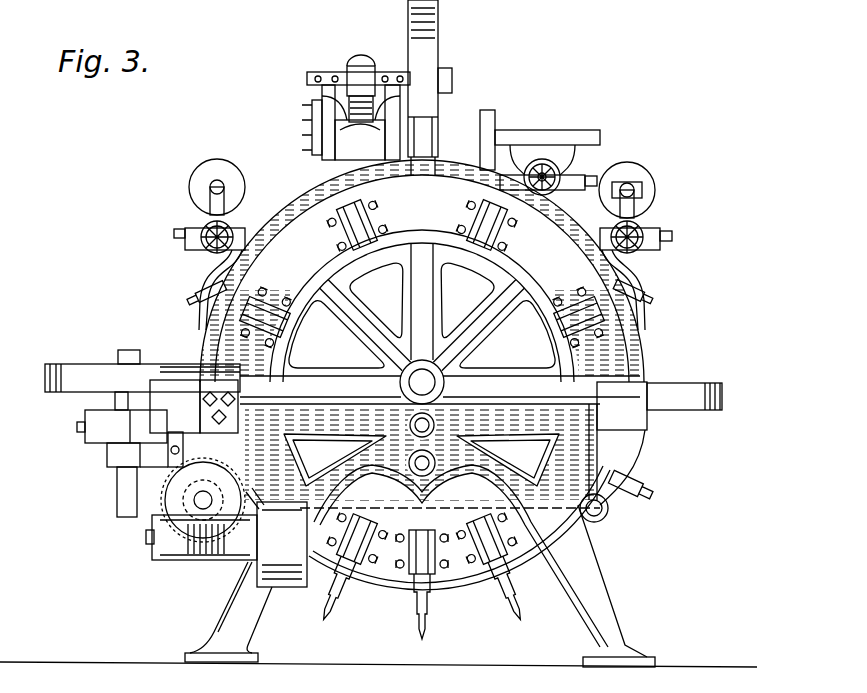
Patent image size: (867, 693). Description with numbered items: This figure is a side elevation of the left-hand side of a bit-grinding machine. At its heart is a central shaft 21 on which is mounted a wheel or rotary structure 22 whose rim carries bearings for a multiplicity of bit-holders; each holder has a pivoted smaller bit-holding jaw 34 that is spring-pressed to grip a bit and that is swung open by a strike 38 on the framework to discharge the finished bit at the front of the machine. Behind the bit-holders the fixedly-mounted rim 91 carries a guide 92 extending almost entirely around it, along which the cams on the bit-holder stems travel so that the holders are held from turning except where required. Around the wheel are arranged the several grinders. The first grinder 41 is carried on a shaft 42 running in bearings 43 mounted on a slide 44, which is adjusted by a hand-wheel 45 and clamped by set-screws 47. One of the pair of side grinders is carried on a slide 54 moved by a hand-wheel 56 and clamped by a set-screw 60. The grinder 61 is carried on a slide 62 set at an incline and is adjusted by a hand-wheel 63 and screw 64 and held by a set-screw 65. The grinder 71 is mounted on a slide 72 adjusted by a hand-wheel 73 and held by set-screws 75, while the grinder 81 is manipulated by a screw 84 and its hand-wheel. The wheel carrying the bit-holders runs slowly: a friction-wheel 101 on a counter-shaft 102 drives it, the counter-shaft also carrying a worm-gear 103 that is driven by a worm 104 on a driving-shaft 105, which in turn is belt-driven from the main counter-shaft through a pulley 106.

The central shaft 21 is at (418, 396).
The wheel or rotary structure 22 is at (470, 590).
The smaller bit-holding jaw 34 is at (212, 290).
The strike 38 is at (647, 360).
The first grinder 41 is at (655, 182).
The shaft 42 is at (628, 183).
The bearings 43 is at (655, 202).
The slide 44 is at (650, 240).
The hand-wheel 45 is at (648, 262).
The set-screws 47 is at (672, 236).
The slide 54 is at (513, 137).
The hand-wheel 56 is at (545, 162).
The set-screw 60 is at (595, 174).
The grinder 61 is at (438, 133).
The slide 62 is at (340, 120).
The hand-wheel 63 is at (360, 56).
The screw 64 is at (360, 140).
The set-screw 65 is at (315, 112).
The grinder 71 is at (198, 168).
The slide 72 is at (186, 238).
The hand-wheel 73 is at (205, 262).
The set-screws 75 is at (174, 232).
The grinder 81 is at (170, 364).
The screw 84 is at (191, 449).
The fixedly-mounted rim 91 is at (480, 268).
The guide 92 is at (362, 250).
The friction-wheel 101 is at (168, 497).
The counter-shaft 102 is at (198, 505).
The worm-gear 103 is at (178, 545).
The worm 104 is at (200, 562).
The driving-shaft 105 is at (146, 537).
The pulley 106 is at (290, 590).